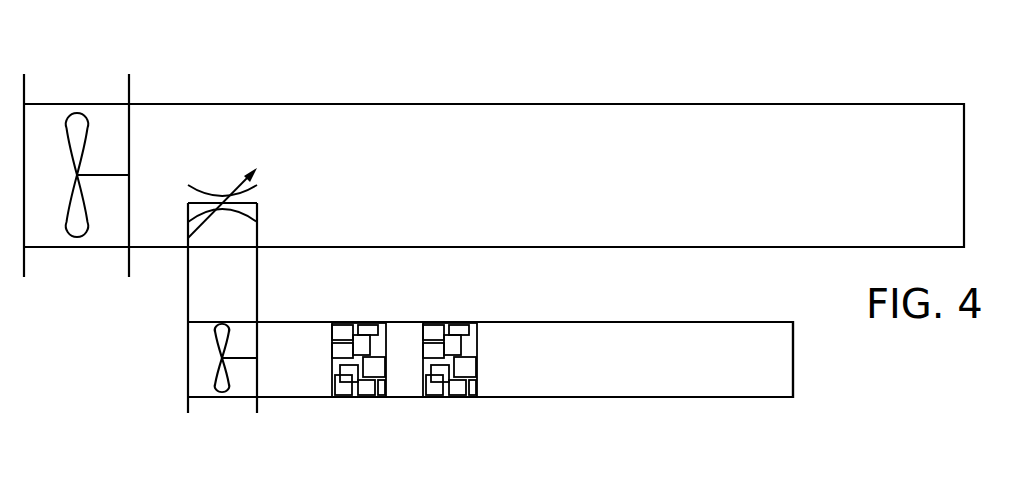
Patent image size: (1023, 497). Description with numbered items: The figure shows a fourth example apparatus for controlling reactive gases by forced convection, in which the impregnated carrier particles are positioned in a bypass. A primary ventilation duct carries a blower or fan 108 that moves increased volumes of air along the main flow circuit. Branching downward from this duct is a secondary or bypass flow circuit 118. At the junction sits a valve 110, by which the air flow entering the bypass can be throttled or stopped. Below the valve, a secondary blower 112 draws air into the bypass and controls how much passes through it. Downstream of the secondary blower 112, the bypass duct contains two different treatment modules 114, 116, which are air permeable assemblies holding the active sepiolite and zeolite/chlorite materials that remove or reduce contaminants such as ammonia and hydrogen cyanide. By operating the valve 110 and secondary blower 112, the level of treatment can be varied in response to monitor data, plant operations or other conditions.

The blower or fan 108 is at (77, 100).
The valve 110 is at (225, 195).
The secondary blower 112 is at (188, 359).
The air permeable assembly 114 is at (355, 350).
The treatment module 116 is at (477, 353).
The secondary or bypass flow circuit 118 is at (659, 356).